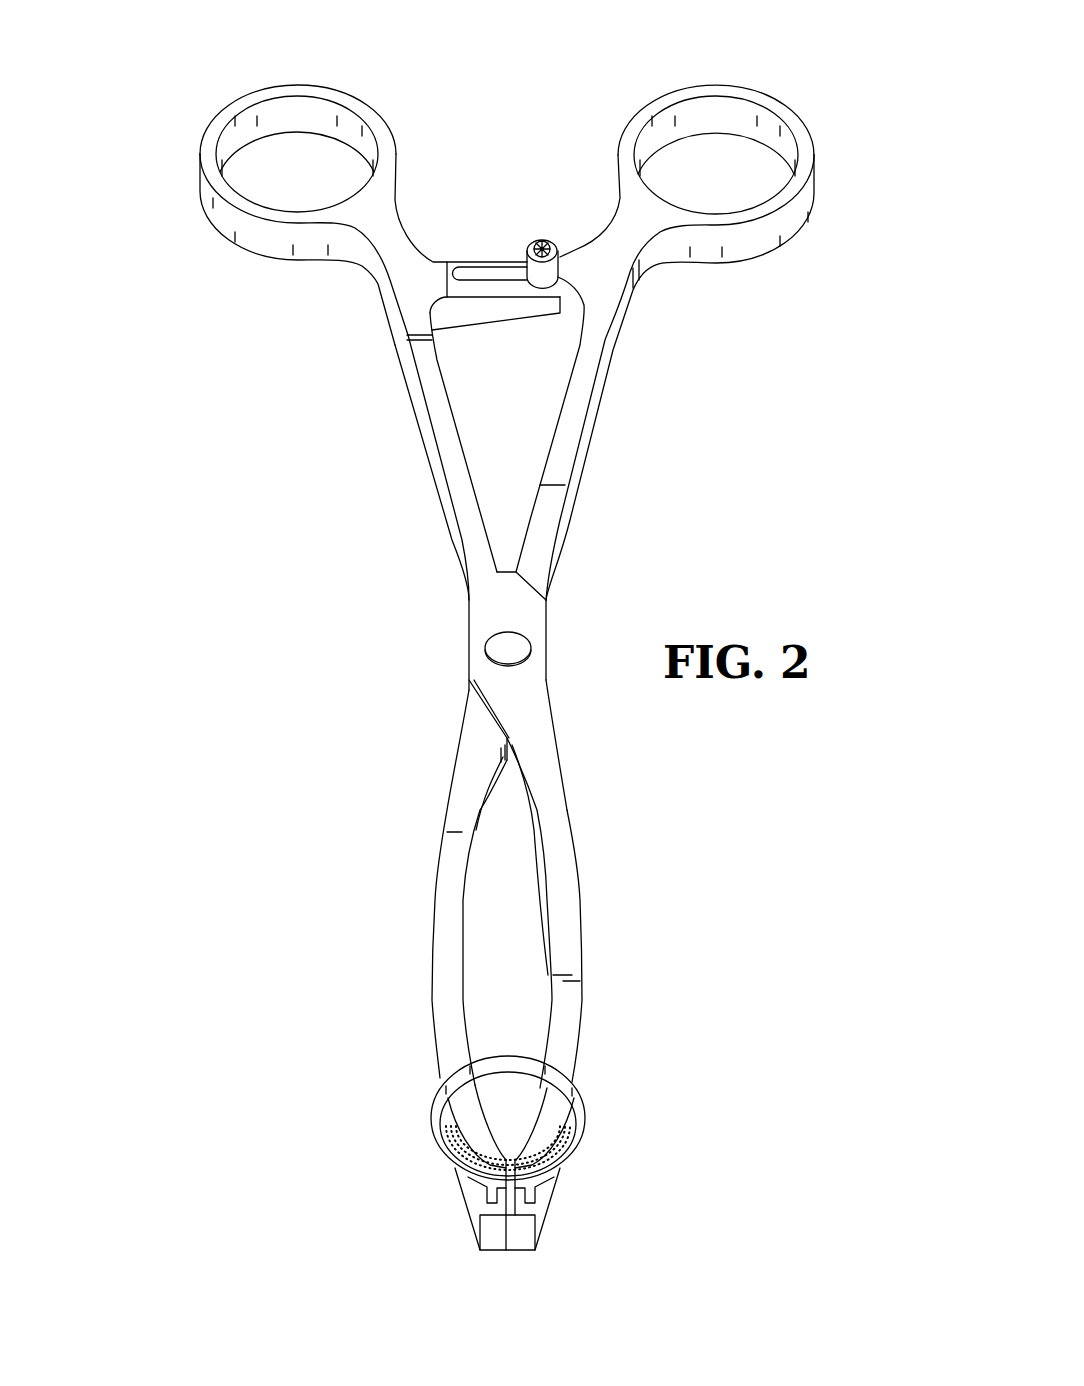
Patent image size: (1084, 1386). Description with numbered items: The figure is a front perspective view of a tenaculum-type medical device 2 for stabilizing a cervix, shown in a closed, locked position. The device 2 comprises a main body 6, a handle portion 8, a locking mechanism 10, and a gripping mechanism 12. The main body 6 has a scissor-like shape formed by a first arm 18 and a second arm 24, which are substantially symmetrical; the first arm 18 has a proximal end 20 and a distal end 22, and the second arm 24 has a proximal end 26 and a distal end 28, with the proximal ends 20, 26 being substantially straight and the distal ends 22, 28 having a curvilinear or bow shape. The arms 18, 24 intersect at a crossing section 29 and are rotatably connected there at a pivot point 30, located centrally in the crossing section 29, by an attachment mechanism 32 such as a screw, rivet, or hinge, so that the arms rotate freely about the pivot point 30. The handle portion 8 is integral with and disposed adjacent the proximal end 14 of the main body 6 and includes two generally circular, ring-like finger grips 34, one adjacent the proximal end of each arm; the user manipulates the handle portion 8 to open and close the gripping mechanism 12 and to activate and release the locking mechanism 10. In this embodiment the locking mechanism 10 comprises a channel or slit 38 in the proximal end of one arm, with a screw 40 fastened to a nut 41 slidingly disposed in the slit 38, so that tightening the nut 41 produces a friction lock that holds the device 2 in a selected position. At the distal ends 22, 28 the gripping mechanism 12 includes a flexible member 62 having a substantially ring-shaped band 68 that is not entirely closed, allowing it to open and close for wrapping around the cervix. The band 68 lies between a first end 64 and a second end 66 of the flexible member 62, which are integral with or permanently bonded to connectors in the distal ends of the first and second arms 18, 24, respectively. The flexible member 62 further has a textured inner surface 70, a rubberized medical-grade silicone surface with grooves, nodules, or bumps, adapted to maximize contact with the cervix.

The medical device 2 is at (161, 464).
The main body 6 is at (401, 631).
The handle portion 8 is at (553, 68).
The locking mechanism 10 is at (511, 320).
The gripping mechanism 12 is at (419, 1196).
The proximal end 14 is at (852, 158).
The first arm 18 is at (453, 470).
The proximal end 20 is at (418, 320).
The distal end 22 is at (452, 1022).
The second arm 24 is at (563, 443).
The proximal end 26 is at (597, 325).
The distal end 28 is at (568, 1012).
The crossing section 29 is at (546, 653).
The pivot point 30 is at (507, 646).
The attachment mechanism 32 is at (527, 633).
The finger grip 34 is at (240, 105).
The slit 38 is at (483, 268).
The screw 40 is at (543, 240).
The nut 41 is at (527, 248).
The flexible member 62 is at (590, 1122).
The first end 64 is at (492, 1217).
The second end 66 is at (522, 1215).
The ring-shaped band 68 is at (440, 1094).
The textured inner surface 70 is at (463, 1155).